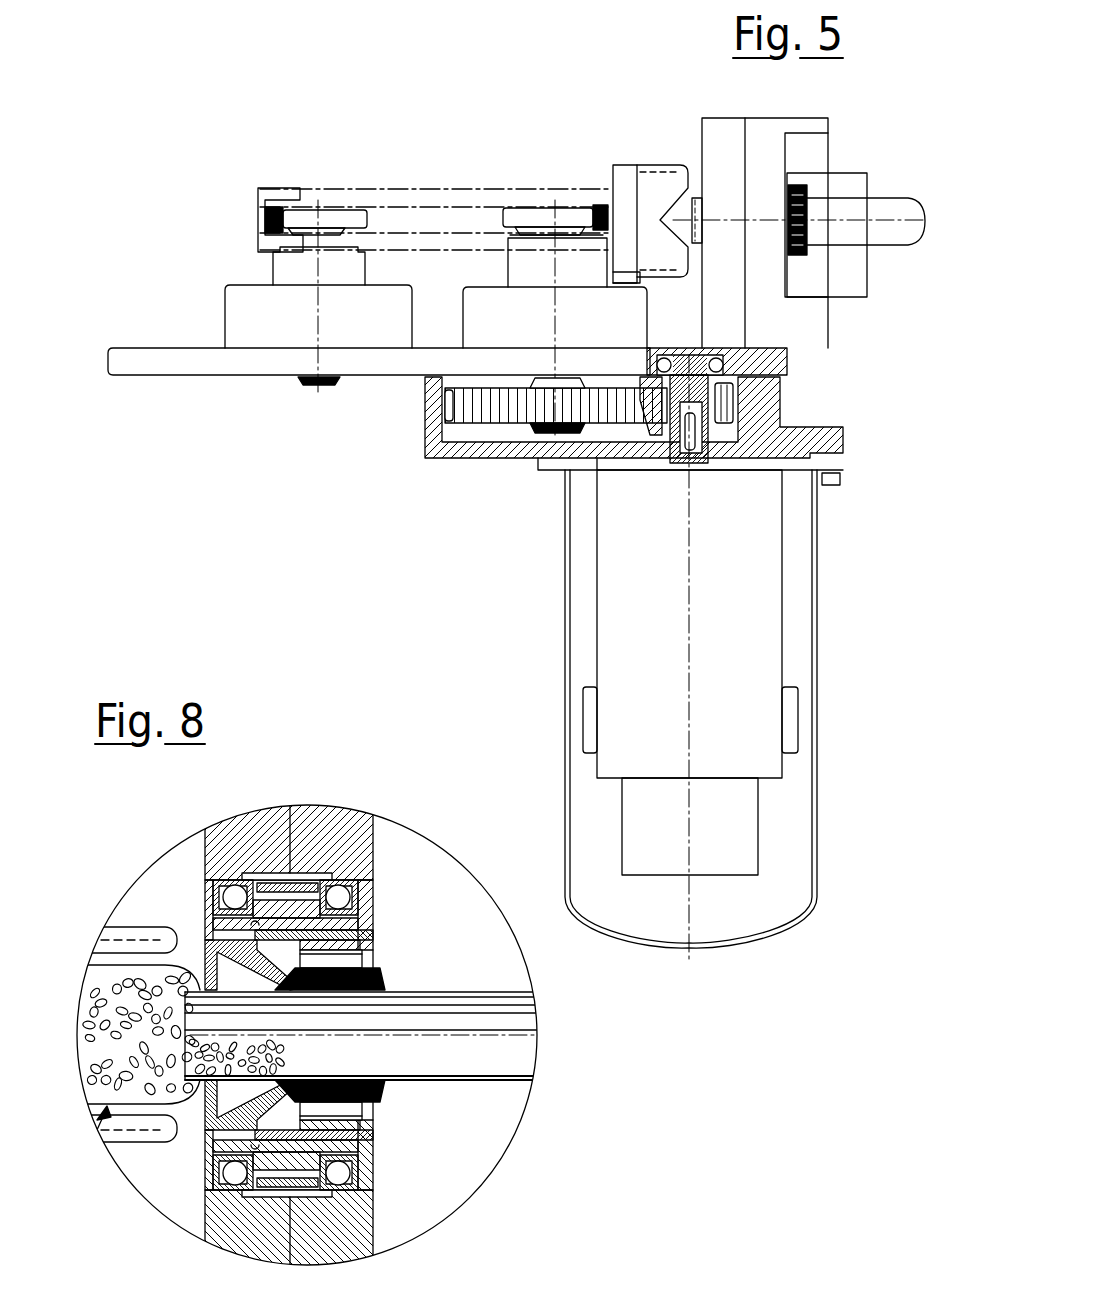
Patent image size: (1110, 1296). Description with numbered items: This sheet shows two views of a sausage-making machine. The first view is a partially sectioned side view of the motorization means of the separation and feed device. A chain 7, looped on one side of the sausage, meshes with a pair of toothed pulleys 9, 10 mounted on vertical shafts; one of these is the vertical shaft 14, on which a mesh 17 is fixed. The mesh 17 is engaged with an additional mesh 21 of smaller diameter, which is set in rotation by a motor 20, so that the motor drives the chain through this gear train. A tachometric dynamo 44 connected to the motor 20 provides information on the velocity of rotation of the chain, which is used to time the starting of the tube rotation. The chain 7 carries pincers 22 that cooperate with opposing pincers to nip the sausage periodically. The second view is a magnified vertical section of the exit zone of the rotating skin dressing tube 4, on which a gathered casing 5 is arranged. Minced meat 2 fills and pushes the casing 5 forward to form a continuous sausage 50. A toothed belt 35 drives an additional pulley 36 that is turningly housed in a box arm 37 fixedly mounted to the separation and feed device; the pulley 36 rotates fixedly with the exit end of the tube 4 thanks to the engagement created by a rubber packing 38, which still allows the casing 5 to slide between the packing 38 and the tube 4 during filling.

In FIG. 8, the minced meat 2 is at (82, 1005).
In FIG. 5, the skin dressing tube 4 is at (880, 228).
In FIG. 8, the skin dressing tube 4 is at (435, 1058).
In FIG. 5, the casing 5 is at (810, 183).
In FIG. 8, the casing 5 is at (390, 985).
In FIG. 5, the chain 7 is at (458, 192).
In FIG. 5, the toothed pulley 9 is at (305, 214).
In FIG. 5, the toothed pulley 10 is at (537, 217).
In FIG. 5, the vertical shaft 14 is at (633, 365).
In FIG. 5, the mesh 17 is at (483, 407).
In FIG. 5, the motor 20 is at (757, 560).
In FIG. 5, the additional mesh 21 is at (713, 407).
In FIG. 5, the pincer 22 is at (657, 183).
In FIG. 8, the pincer 22 is at (123, 1120).
In FIG. 8, the toothed belt 35 is at (281, 885).
In FIG. 8, the additional pulley 36 is at (377, 922).
In FIG. 5, the box arm 37 is at (713, 138).
In FIG. 8, the box arm 37 is at (352, 850).
In FIG. 8, the rubber packing 38 is at (203, 988).
In FIG. 5, the tachometric dynamo 44 is at (733, 860).
In FIG. 8, the continuous sausage 50 is at (78, 1156).